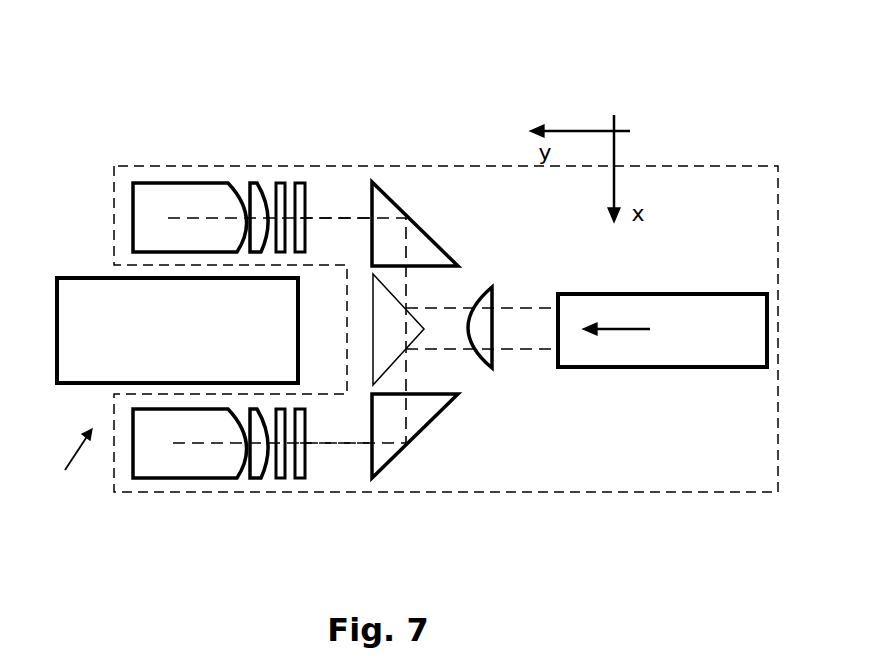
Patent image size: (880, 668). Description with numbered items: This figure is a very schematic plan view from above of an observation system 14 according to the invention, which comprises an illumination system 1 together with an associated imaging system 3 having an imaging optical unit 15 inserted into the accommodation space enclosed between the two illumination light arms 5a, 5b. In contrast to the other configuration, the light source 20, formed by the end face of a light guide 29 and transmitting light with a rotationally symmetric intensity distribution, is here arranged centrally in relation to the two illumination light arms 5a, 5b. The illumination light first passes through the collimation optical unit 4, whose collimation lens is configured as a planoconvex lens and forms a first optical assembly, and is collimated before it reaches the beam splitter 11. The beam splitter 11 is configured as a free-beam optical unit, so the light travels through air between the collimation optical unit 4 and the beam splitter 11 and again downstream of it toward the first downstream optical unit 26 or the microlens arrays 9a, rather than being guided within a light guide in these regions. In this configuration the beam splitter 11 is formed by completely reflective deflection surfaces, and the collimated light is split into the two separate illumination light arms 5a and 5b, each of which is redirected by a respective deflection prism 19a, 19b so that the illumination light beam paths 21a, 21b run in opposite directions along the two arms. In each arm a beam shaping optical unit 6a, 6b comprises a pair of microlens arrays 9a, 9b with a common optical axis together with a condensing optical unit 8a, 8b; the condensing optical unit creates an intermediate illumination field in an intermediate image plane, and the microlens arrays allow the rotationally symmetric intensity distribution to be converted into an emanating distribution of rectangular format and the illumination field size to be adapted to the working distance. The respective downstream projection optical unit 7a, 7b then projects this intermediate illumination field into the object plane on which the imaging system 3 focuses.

The illumination system 1 is at (650, 492).
The imaging system 3 is at (163, 303).
The imaging optical unit 15 is at (97, 300).
The collimation optical unit 4 is at (501, 368).
The first downstream optical unit 26 is at (485, 360).
The first illumination light arm 5a is at (114, 75).
The second illumination light arm 5b is at (105, 585).
The first beam shaping optical unit 6a is at (243, 118).
The second beam shaping optical unit 6b is at (232, 538).
The first projection optical unit 7a is at (155, 197).
The second projection optical unit 7b is at (157, 453).
The first condensing optical unit 8a is at (256, 195).
The second condensing optical unit 8b is at (260, 457).
The first microlens arrays 9a is at (293, 182).
The second microlens arrays 9b is at (300, 480).
The beam splitter 11 is at (385, 317).
The observation system 14 is at (58, 465).
The first deflection prism 19a is at (422, 247).
The second deflection prism 19b is at (415, 417).
The light source 20 is at (550, 326).
The first illumination light beam path 21a is at (342, 218).
The second illumination light beam path 21b is at (333, 445).
The light guide 29 is at (648, 345).